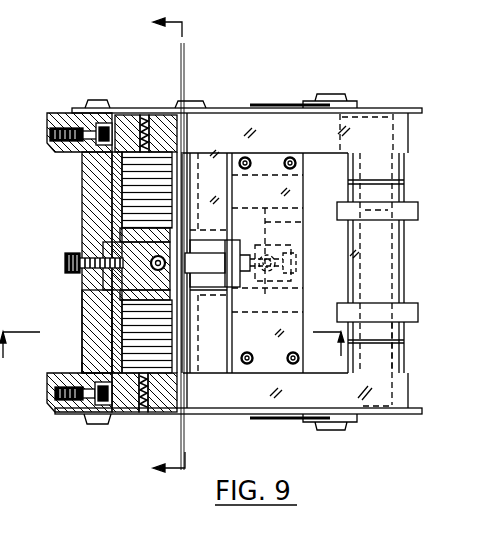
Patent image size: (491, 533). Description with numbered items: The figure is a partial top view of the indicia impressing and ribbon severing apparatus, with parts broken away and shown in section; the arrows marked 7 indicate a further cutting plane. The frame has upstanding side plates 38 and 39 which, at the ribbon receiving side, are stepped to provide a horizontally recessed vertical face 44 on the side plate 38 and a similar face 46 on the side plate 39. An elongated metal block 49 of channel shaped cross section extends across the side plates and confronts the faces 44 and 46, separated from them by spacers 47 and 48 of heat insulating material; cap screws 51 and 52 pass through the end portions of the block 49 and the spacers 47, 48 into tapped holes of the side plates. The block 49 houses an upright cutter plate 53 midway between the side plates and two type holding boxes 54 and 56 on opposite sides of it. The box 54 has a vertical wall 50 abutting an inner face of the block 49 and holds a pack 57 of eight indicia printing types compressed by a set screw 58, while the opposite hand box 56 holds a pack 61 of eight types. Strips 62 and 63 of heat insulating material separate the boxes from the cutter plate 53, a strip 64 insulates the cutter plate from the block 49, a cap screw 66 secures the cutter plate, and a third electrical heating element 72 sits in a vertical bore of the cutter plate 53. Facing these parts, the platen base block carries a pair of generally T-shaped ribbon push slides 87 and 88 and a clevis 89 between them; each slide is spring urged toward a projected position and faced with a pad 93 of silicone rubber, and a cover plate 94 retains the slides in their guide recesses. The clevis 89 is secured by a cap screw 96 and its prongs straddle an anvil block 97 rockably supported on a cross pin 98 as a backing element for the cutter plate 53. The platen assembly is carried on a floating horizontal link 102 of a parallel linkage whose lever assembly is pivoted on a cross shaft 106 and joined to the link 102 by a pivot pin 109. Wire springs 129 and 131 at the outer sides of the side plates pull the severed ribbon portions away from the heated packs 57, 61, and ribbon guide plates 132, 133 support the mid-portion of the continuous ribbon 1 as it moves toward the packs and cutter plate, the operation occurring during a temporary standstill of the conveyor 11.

The ribbon 1 is at (186, 74).
The section line 7- 7 is at (172, 348).
The conveyor 11 is at (169, 245).
The side plate 38 is at (60, 412).
The side plate 39 is at (60, 113).
The horizontally recessed vertical face 44 is at (88, 406).
The horizontally recessed vertical face 46 is at (72, 113).
The spacer 47 is at (80, 375).
The spacer 48 is at (80, 155).
The elongated metal block 49 is at (88, 188).
The vertical wall 50 is at (100, 302).
The cap screw 51 is at (62, 389).
The cap screw 52 is at (118, 133).
The cutter plate 53 is at (188, 243).
The type holding box 54 is at (132, 402).
The type holding box 56 is at (162, 125).
The pack of indicia printing types 57 is at (175, 366).
The set screw 58 is at (145, 115).
The pack of indicia printing types 61 is at (172, 165).
The strip of heat insulating material 62 is at (112, 285).
The strip of heat insulating material 63 is at (105, 245).
The strip of heat insulating material 64 is at (103, 250).
The cap screw 66 is at (66, 263).
The electrical heating element 72 is at (147, 268).
The ribbon push slide 87 is at (223, 343).
The ribbon push slide 88 is at (268, 175).
The clevis 89 is at (233, 275).
The pad 93 is at (201, 172).
The cover plate 94 is at (303, 165).
The cap screw 96 is at (275, 249).
The anvil block 97 is at (222, 250).
The cross pin 98 is at (236, 293).
The floating horizontal link 102 is at (366, 250).
The cross shaft 106 is at (348, 190).
The pivot pin 109 is at (360, 260).
The ribbon engaging wire spring 129 is at (275, 420).
The ribbon engaging wire spring 131 is at (278, 105).
The ribbon guide plate 132 is at (385, 418).
The ribbon guide plate 133 is at (385, 110).